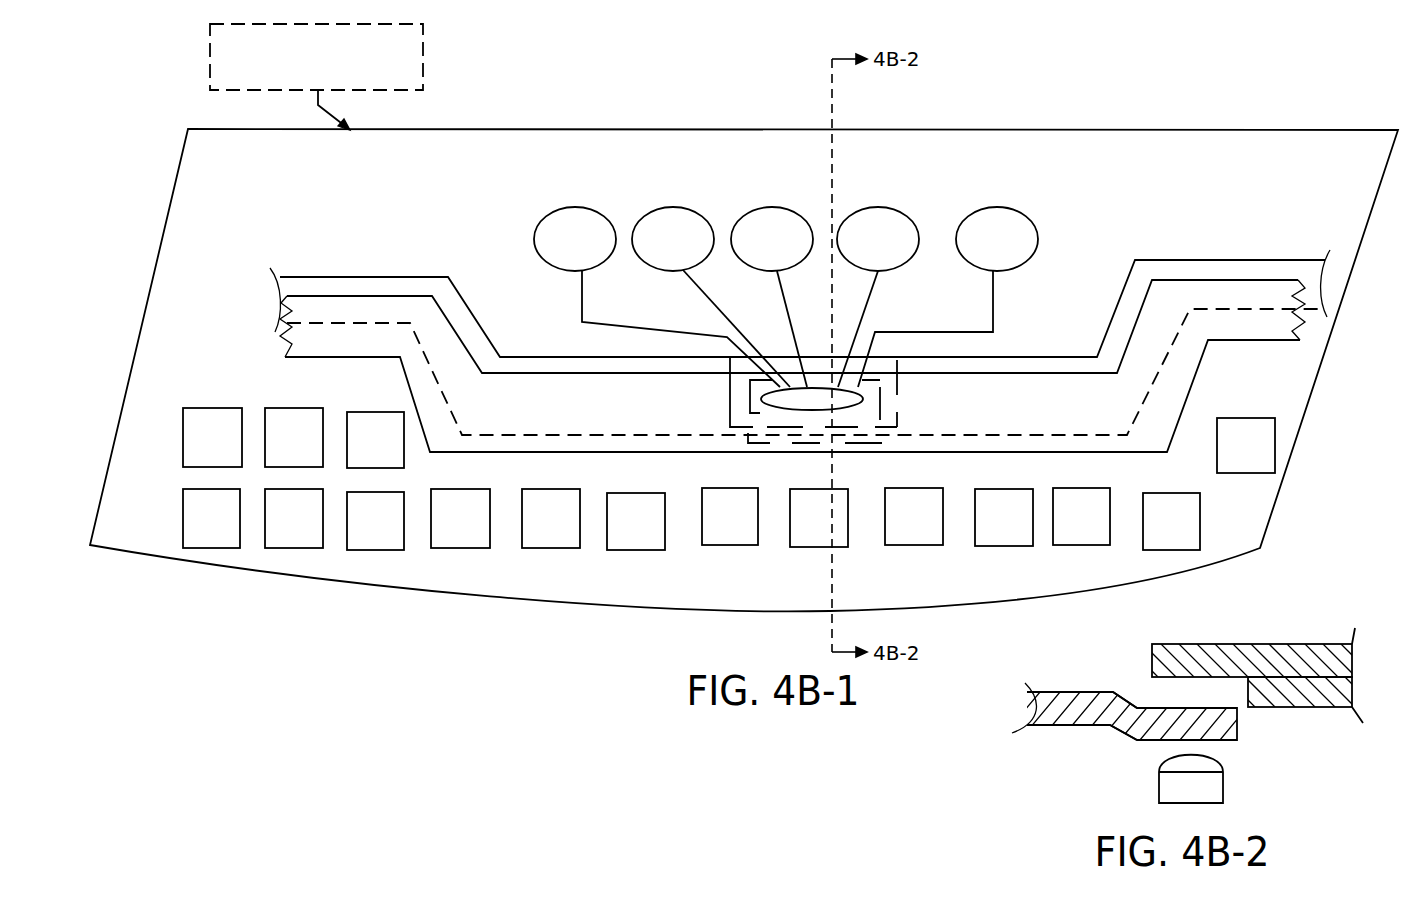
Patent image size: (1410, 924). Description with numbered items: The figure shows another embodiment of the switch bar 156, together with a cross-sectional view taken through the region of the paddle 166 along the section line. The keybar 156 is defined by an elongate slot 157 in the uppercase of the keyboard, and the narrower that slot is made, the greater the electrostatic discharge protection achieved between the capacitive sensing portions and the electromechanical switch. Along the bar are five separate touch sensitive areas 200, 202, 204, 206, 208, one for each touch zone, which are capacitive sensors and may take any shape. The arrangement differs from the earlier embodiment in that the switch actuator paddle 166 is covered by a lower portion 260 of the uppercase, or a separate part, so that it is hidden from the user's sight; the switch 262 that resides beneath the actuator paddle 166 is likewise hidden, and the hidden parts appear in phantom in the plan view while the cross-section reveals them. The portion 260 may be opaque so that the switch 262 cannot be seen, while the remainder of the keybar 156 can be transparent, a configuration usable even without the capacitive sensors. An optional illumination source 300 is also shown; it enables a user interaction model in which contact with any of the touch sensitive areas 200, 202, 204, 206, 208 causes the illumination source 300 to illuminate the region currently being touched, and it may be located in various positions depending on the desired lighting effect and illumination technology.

In FIG. 4B-1, the illumination source 300 is at (425, 78).
In FIG. 4B-1, the switch bar 156 is at (477, 128).
In FIG. 4B-2, the switch bar 156 is at (1058, 690).
In FIG. 4B-1, the elongate slot 157 is at (358, 268).
In FIG. 4B-1, the touch sensitive area 200 is at (569, 207).
In FIG. 4B-1, the touch sensitive area 202 is at (673, 207).
In FIG. 4B-1, the touch sensitive area 204 is at (777, 207).
In FIG. 4B-1, the touch sensitive area 206 is at (882, 207).
In FIG. 4B-1, the touch sensitive area 208 is at (993, 207).
In FIG. 4B-1, the switch actuator paddle 166 is at (730, 412).
In FIG. 4B-2, the switch actuator paddle 166 is at (1147, 703).
In FIG. 4B-1, the switch 262 is at (748, 433).
In FIG. 4B-2, the switch 262 is at (1227, 793).
In FIG. 4B-1, the lower portion of the uppercase 260 is at (1187, 405).
In FIG. 4B-2, the lower portion of the uppercase 260 is at (1182, 643).